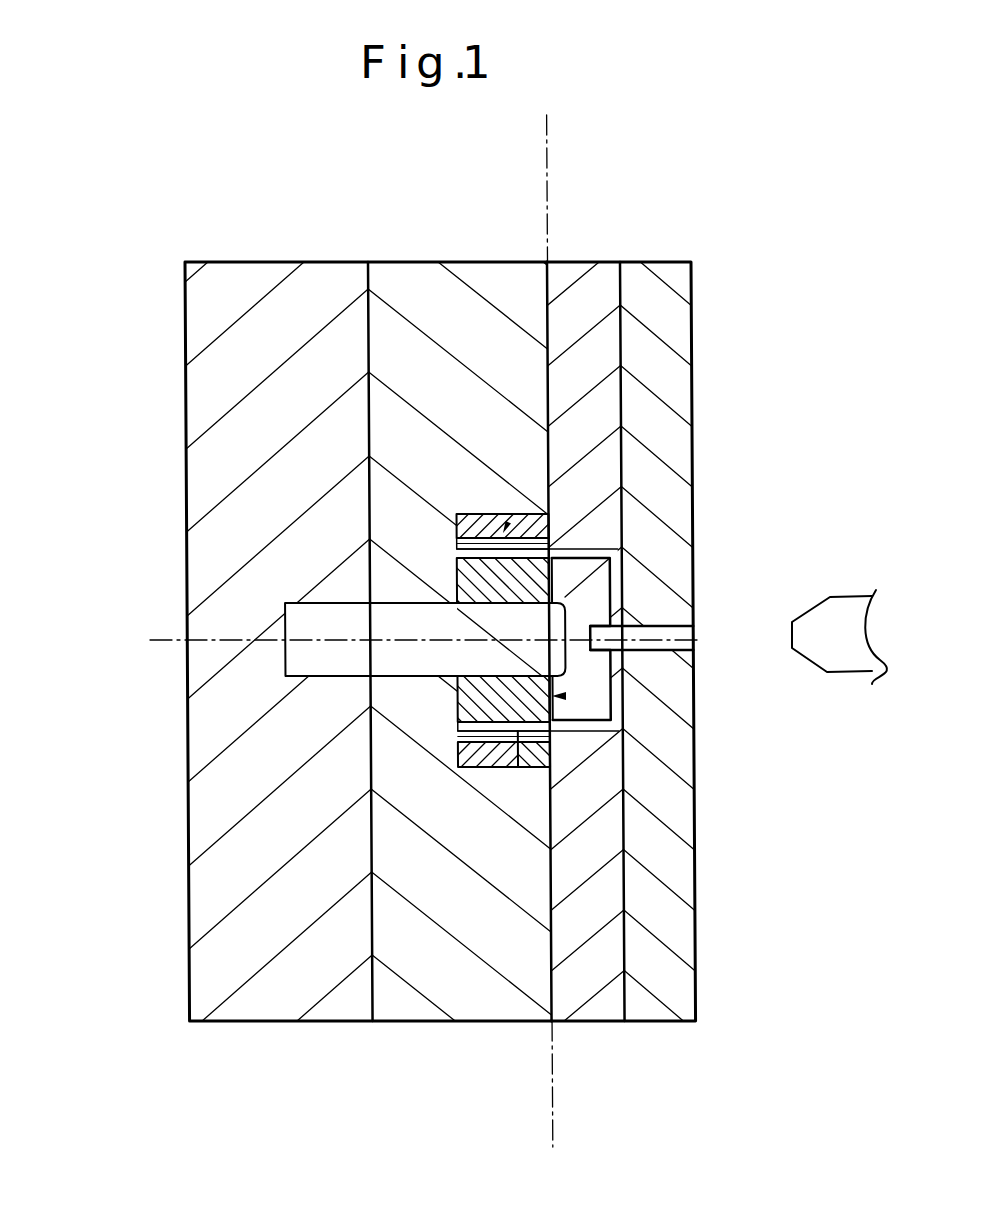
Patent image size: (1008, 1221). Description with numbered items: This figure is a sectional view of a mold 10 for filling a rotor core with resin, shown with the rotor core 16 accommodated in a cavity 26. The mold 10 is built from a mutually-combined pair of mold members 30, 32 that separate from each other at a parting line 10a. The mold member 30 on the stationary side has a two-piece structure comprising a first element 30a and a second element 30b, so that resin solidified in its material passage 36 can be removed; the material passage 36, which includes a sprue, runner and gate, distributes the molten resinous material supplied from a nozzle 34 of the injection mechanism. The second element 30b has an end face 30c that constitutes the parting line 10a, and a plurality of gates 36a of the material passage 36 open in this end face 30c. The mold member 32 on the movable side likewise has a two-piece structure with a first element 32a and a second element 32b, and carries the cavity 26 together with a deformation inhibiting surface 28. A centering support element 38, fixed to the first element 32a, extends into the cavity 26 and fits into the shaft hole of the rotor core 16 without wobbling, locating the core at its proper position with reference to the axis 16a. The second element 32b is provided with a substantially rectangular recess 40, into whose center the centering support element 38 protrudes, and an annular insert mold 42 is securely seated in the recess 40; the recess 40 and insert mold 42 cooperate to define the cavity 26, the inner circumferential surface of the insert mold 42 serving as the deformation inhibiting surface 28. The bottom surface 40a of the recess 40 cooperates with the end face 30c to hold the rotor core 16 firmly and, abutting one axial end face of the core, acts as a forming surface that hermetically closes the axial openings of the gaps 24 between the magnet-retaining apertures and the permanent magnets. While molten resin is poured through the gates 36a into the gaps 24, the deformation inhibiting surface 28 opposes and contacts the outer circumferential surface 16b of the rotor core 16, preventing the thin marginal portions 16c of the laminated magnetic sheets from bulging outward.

The mold 10 is at (288, 207).
The parting line 10a is at (547, 140).
The rotor core 16 is at (513, 512).
The axis 16a is at (155, 648).
The outer circumferential surface 16b is at (522, 770).
The marginal portions 16c is at (473, 512).
The gaps 24 is at (547, 762).
The cavity 26 is at (566, 696).
The deformation inhibiting surface 28 is at (548, 547).
The mold member 30 is at (722, 1087).
The first element 30a is at (650, 1002).
The second element 30b is at (598, 1002).
The end face 30c is at (560, 768).
The mold member 32 is at (455, 1090).
The first element 32a is at (283, 1002).
The second element 32b is at (407, 1000).
The nozzle 34 is at (848, 668).
The material passage 36 is at (612, 596).
The gates 36a is at (614, 551).
The centering support element 38 is at (290, 660).
The recess 40 is at (548, 513).
The bottom surface 40a is at (478, 770).
The insert mold 42 is at (505, 528).